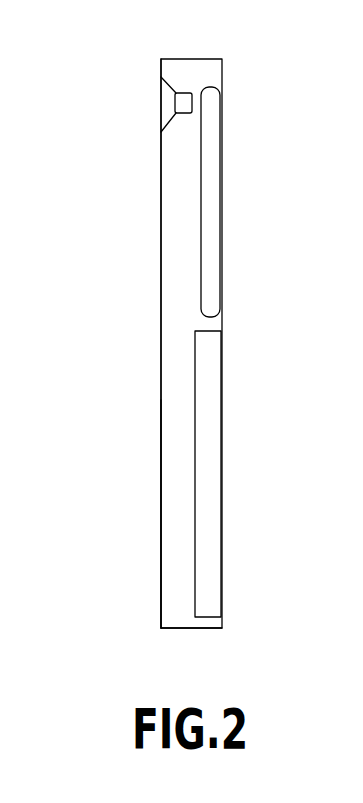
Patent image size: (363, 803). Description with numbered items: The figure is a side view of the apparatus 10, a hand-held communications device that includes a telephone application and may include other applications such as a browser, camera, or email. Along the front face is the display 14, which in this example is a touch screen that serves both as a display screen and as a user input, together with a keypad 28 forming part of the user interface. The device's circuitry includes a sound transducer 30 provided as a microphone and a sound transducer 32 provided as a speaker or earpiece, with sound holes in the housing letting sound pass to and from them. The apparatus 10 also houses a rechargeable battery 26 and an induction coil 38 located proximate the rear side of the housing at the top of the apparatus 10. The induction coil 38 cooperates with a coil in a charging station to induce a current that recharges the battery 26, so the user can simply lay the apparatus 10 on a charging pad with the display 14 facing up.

The apparatus 10 is at (282, 64).
The display 14 is at (161, 223).
The rechargeable battery 26 is at (218, 457).
The keypad 28 is at (161, 507).
The sound transducer 30 is at (178, 628).
The sound transducer 32 is at (161, 111).
The induction coil 38 is at (222, 213).